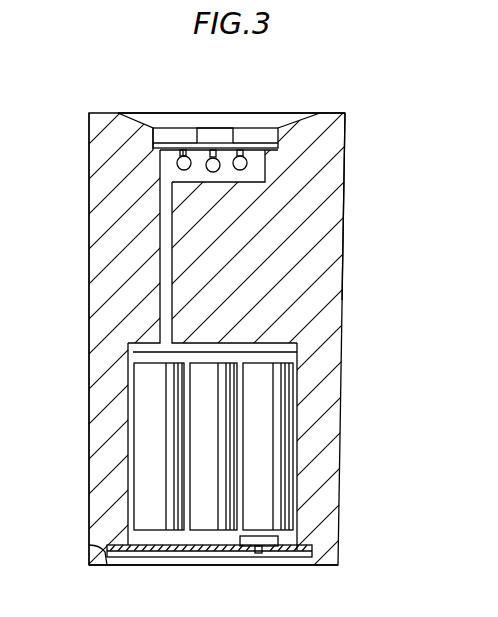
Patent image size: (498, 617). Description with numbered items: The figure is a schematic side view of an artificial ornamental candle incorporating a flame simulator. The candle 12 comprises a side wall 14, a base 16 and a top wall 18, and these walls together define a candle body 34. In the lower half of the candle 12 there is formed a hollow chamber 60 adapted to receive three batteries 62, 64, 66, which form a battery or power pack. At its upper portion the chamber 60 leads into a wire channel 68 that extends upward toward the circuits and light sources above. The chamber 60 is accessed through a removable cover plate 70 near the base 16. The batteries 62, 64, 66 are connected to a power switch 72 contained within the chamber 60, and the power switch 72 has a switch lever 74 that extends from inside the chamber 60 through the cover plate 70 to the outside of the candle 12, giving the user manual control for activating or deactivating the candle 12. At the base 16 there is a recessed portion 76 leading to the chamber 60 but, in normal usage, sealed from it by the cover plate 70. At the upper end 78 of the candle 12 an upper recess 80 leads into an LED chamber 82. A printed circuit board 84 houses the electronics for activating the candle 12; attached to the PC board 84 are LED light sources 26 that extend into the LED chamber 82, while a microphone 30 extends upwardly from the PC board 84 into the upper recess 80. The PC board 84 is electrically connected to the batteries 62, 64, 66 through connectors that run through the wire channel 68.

The candle 12 is at (344, 279).
The side wall 14 is at (90, 419).
The base 16 is at (198, 563).
The top wall 18 is at (321, 113).
The LED light sources 26 is at (168, 158).
The microphone 30 is at (222, 128).
The candle body 34 is at (90, 252).
The hollow chamber 60 is at (133, 350).
The battery 62 is at (143, 451).
The battery 64 is at (196, 451).
The battery 66 is at (252, 451).
The wire channel 68 is at (165, 292).
The removable cover plate 70 is at (110, 548).
The power switch 72 is at (248, 542).
The switch lever 74 is at (257, 555).
The recessed portion 76 is at (136, 560).
The upper end 78 is at (346, 121).
The upper recess 80 is at (136, 128).
The LED chamber 82 is at (160, 201).
The printed circuit board 84 is at (153, 146).